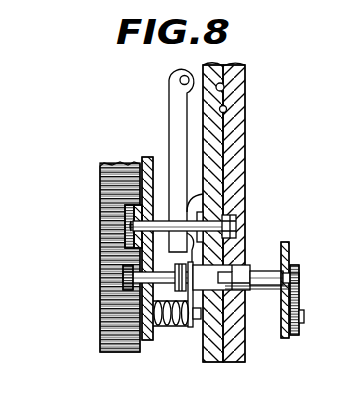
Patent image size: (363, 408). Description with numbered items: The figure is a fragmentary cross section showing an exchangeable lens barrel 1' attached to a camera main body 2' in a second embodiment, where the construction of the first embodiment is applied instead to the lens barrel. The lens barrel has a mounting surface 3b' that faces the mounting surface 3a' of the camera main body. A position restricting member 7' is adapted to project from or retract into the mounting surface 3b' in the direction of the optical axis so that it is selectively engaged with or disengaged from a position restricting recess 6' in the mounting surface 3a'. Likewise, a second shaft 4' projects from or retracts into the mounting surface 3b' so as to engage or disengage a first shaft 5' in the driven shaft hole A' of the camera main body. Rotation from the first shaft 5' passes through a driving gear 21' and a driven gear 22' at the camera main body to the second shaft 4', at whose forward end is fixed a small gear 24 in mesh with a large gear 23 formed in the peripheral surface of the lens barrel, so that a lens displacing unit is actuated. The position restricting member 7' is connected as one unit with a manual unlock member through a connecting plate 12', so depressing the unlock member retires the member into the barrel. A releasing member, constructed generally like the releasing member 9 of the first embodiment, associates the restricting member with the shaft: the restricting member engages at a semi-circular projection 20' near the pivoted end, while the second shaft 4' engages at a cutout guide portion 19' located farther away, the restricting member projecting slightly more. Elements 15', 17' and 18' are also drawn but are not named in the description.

The exchangeable lens barrel 1' is at (200, 229).
The camera main body 2' is at (249, 231).
The mounting surface of the camera main body 3a' is at (237, 230).
The mounting surface of the exchangeable lens barrel 3b' is at (172, 105).
The second shaft 4' is at (176, 306).
The first shaft 5' is at (295, 288).
The position restricting recess 6' is at (264, 229).
The position restricting member 7' is at (210, 213).
The releasing member 9 is at (168, 140).
The connecting plate 12' is at (97, 233).
The pivot 15' is at (149, 76).
The bushing block 17' is at (238, 315).
The spring 18' is at (166, 339).
The cutout guide portion 19' is at (193, 313).
The semi-circular projection 20' is at (238, 217).
The driving gear 21' is at (326, 327).
The driven gear 22' is at (321, 300).
The large gear 23 is at (101, 190).
The small gear 24 is at (122, 274).
The driven shaft hole A' is at (257, 314).